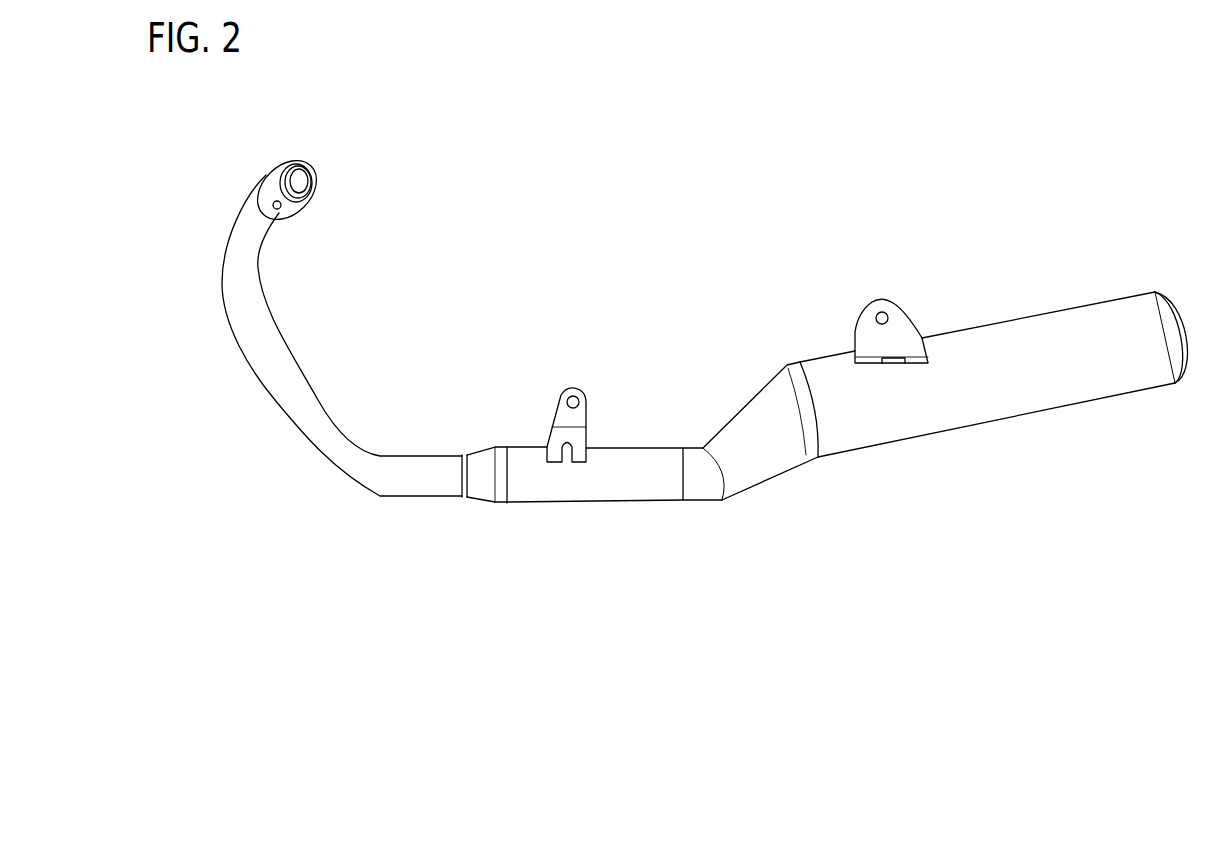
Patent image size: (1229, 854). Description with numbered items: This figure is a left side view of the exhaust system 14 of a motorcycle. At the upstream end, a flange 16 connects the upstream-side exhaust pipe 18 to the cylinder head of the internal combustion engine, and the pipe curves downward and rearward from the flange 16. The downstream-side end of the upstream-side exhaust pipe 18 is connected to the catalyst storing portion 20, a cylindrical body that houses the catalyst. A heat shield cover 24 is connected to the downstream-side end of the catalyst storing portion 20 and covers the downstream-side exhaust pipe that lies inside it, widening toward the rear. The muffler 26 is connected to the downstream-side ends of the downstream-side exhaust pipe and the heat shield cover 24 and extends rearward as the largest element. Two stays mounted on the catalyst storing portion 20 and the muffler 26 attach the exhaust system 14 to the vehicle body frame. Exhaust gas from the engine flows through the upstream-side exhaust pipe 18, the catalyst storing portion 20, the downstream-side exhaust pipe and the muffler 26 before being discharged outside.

The exhaust system 14 is at (558, 123).
The flange 16 is at (276, 166).
The upstream-side exhaust pipe 18 is at (273, 395).
The catalyst storing portion 20 is at (600, 505).
The heat shield cover 24 is at (768, 477).
The muffler 26 is at (1004, 420).